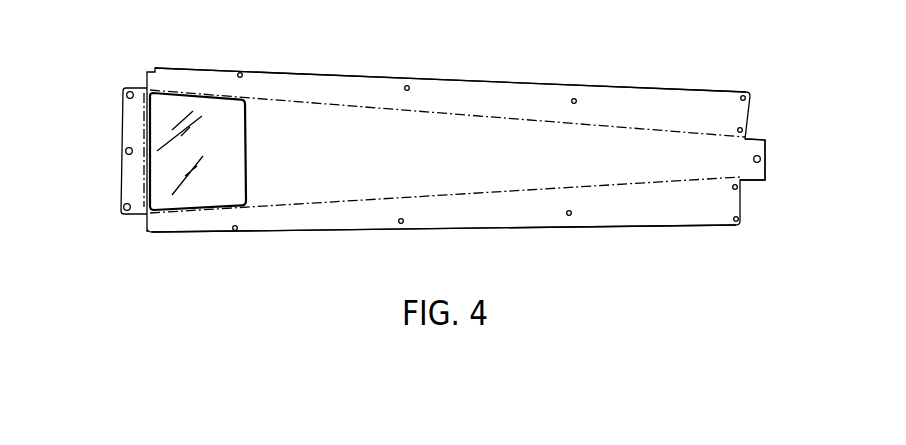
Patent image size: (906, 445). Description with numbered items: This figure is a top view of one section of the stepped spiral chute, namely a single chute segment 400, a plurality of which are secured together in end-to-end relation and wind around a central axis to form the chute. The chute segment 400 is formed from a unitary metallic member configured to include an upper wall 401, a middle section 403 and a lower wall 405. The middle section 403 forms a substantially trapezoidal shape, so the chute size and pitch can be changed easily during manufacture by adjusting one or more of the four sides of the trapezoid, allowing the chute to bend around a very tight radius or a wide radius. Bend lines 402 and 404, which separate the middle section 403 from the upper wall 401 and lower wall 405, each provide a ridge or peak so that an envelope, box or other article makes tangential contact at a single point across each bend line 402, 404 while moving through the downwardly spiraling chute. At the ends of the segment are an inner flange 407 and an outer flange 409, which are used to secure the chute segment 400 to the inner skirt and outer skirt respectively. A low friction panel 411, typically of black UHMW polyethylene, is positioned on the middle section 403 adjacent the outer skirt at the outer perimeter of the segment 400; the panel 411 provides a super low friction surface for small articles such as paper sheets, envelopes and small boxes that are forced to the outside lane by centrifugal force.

The chute segment 400 is at (233, 300).
The upper wall 401 is at (547, 97).
The bend line 402 is at (460, 113).
The middle section 403 is at (352, 140).
The bend line 404 is at (640, 182).
The lower wall 405 is at (670, 212).
The inner flange 407 is at (752, 148).
The outer flange 409 is at (128, 132).
The low friction panel 411 is at (180, 110).